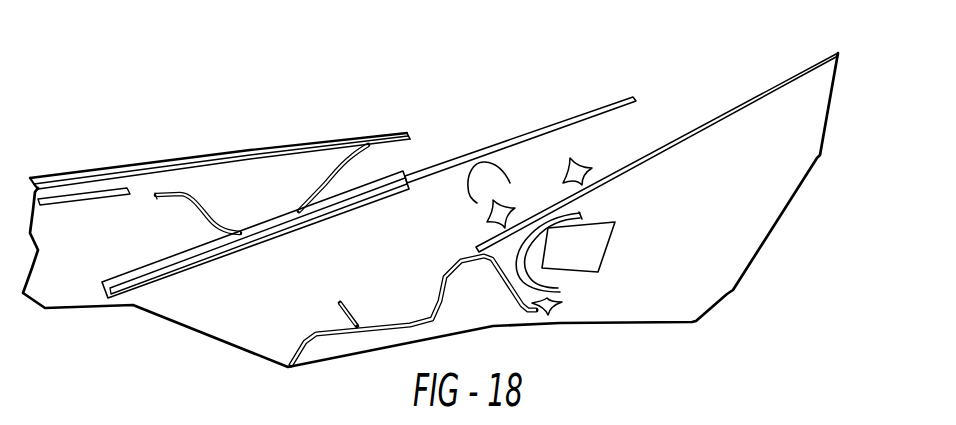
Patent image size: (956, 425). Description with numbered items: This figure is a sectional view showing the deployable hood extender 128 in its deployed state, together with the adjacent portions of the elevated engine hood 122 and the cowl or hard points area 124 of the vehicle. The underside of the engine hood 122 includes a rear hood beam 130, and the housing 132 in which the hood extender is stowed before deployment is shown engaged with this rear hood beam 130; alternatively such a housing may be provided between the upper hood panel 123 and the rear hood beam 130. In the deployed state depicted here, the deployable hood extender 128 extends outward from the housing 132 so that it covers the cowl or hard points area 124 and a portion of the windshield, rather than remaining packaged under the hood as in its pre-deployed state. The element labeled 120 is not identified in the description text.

The door inner panel 120 is at (773, 87).
The engine hood 122 is at (209, 157).
The upper hood panel 123 is at (73, 173).
The cowl or hard points area 124 is at (548, 280).
The deployable hood extender 128 is at (587, 113).
The rear hood beam 130 is at (333, 177).
The housing 132 is at (183, 268).